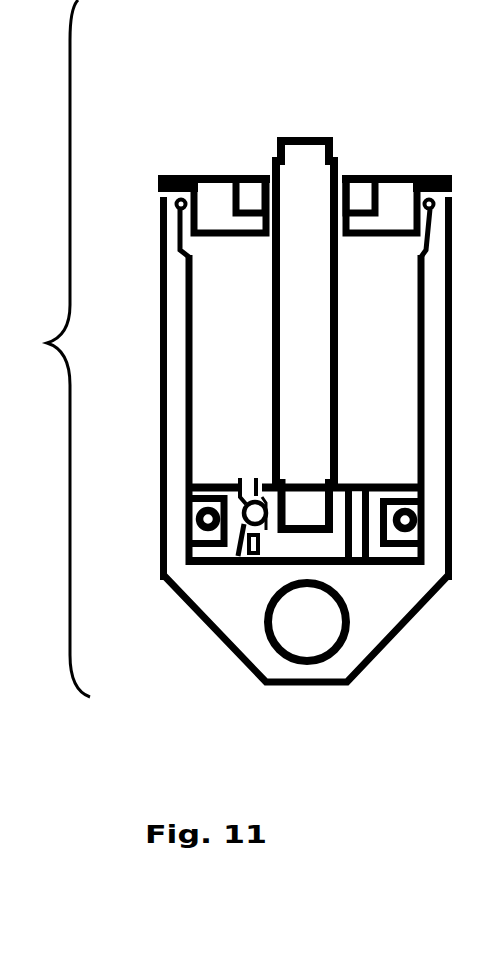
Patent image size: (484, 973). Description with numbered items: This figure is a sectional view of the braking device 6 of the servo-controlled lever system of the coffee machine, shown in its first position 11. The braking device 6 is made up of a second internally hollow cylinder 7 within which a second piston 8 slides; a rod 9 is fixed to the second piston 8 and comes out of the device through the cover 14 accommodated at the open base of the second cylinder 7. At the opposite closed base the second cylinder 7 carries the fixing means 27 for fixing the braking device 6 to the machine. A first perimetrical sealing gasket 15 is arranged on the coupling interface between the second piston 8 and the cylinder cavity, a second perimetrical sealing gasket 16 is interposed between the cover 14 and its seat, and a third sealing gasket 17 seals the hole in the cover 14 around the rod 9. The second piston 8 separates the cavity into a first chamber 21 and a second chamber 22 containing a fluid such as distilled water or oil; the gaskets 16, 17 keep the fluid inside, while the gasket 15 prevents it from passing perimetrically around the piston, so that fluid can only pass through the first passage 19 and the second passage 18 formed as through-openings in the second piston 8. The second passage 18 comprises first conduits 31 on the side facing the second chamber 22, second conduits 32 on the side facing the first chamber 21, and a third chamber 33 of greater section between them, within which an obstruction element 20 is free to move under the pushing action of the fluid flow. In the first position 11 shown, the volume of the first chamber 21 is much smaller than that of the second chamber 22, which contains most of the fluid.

The braking device 6 is at (53, 348).
The second cylinder 7 is at (163, 312).
The second piston 8 is at (192, 483).
The rod 9 is at (276, 268).
The first position 11 is at (400, 588).
The cover 14 is at (178, 177).
The first perimetrical sealing gasket 15 is at (193, 518).
The second perimetrical sealing gasket 16 is at (178, 248).
The third sealing gasket 17 is at (250, 182).
The second passage 18 is at (238, 476).
The first passage 19 is at (358, 478).
The obstruction element 20 is at (250, 497).
The first chamber 21 is at (186, 560).
The second chamber 22 is at (208, 383).
The fixing means 27 is at (290, 648).
The first conduits 31 is at (255, 488).
The second conduits 32 is at (267, 550).
The third chamber 33 is at (247, 525).